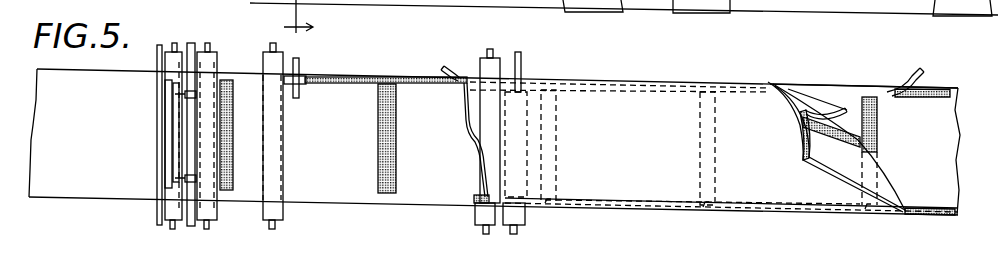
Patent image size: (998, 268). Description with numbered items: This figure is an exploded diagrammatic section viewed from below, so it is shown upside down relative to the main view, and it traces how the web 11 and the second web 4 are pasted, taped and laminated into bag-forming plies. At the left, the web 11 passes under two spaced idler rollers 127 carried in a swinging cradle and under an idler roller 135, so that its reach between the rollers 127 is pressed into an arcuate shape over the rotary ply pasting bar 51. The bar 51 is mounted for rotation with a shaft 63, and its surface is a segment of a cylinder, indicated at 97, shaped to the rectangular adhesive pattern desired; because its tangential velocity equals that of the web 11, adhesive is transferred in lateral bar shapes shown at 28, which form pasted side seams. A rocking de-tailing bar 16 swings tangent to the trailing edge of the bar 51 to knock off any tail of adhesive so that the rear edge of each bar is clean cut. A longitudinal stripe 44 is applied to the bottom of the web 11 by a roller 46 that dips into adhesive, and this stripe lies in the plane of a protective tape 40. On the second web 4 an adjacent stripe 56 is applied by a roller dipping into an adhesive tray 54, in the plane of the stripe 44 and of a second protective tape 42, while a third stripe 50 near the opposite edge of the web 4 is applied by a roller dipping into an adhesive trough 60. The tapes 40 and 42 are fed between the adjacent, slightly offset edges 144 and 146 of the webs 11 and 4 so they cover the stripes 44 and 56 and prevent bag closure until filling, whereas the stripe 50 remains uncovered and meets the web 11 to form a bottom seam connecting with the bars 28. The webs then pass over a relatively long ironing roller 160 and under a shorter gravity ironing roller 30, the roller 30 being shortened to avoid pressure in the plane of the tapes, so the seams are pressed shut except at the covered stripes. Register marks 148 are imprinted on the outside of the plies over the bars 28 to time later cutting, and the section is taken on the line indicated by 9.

The second web 4 is at (708, 165).
The section line 9 is at (290, 18).
The web 11 is at (45, 88).
The de-tailing bar 16 is at (156, 162).
The bars of adhesive 28 is at (230, 133).
The gravity ironing roller 30 is at (519, 214).
The protective tape 40 is at (443, 72).
The protective tape 42 is at (458, 76).
The adhesive stripe 44 is at (355, 78).
The adhesive roller 46 is at (302, 84).
The third adhesive stripe 50 is at (472, 202).
The ply pasting bar 51 is at (165, 137).
The adhesive tray 54 is at (312, 0).
The adhesive stripe 56 is at (812, 147).
The adhesive trough 60 is at (345, 4).
The shaft 63 is at (188, 228).
The cylindrical segment surface 97 is at (165, 115).
The idler rollers 127 is at (170, 213).
The idler roller 135 is at (277, 210).
The web edge 144 is at (400, 76).
The web edge 146 is at (533, 78).
The register marks 148 is at (565, 204).
The ironing roller 160 is at (497, 205).